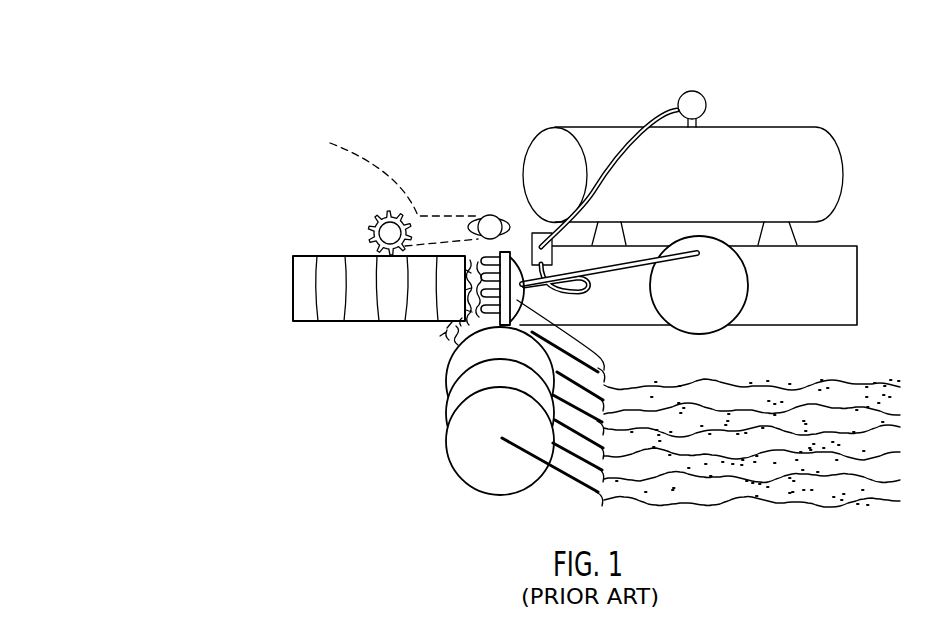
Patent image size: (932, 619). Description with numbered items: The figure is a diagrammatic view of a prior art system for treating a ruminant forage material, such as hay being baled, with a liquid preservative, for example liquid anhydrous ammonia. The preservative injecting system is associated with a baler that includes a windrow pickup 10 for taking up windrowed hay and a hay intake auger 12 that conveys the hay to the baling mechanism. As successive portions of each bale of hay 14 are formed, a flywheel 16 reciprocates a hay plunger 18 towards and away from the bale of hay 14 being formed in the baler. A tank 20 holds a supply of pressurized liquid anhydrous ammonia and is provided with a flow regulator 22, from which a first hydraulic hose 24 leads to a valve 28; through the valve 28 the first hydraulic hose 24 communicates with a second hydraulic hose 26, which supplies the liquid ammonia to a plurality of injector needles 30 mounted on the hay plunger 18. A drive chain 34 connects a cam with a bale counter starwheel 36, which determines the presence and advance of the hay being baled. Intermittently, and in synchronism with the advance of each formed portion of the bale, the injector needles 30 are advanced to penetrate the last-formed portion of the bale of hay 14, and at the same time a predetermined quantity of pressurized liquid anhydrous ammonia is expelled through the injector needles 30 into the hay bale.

The windrow pickup 10 is at (574, 478).
The hay intake auger 12 is at (446, 470).
The bale of hay 14 is at (320, 322).
The flywheel 16 is at (722, 333).
The hay plunger 18 is at (532, 310).
The tank 20 is at (814, 127).
The flow regulator 22 is at (697, 92).
The first hydraulic hose 24 is at (618, 151).
The second hydraulic hose 26 is at (584, 290).
The valve 28 is at (533, 240).
The injector needles 30 is at (485, 257).
The drive chain 34 is at (388, 187).
The bale counter starwheel 36 is at (378, 218).